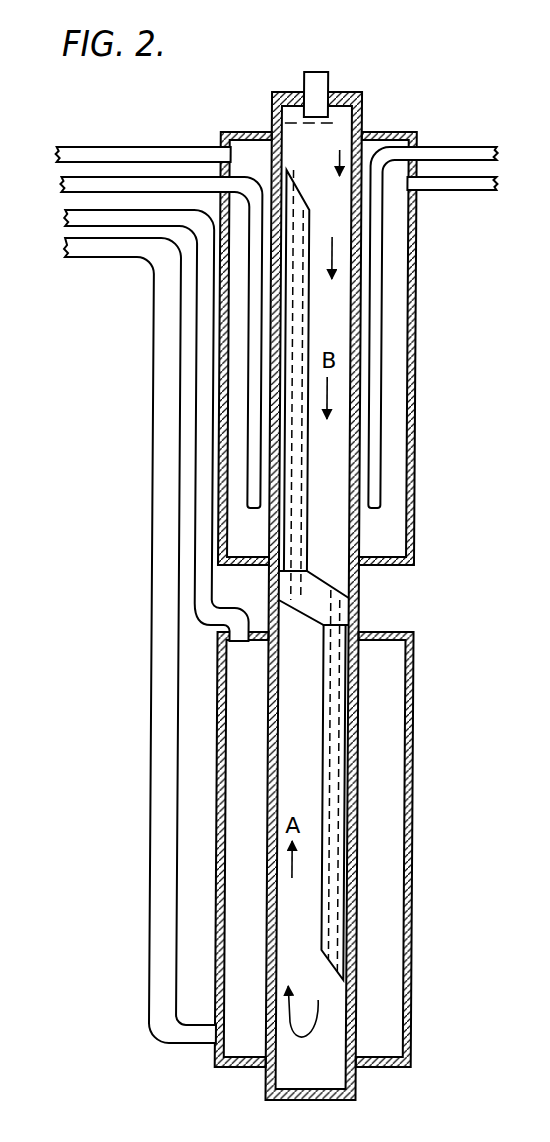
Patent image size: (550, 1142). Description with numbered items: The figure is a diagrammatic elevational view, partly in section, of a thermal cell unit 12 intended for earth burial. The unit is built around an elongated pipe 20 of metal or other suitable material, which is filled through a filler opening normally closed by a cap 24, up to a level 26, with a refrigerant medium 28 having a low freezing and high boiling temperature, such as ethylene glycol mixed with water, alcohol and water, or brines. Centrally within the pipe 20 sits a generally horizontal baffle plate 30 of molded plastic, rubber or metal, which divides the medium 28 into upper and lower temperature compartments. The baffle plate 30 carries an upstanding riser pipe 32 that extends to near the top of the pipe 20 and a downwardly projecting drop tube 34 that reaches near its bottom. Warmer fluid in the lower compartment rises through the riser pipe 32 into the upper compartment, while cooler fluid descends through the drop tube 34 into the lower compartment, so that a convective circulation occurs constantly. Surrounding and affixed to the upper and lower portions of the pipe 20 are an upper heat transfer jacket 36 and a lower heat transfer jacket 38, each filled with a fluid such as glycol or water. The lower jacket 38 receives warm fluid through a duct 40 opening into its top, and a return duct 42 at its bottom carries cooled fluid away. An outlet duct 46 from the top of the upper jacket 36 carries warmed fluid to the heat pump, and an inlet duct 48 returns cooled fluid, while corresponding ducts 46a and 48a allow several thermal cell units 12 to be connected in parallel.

The thermal cell unit 12 is at (465, 296).
The elongated pipe 20 is at (358, 578).
The cap 24 is at (323, 82).
The level 26 is at (340, 122).
The refrigerant medium 28 is at (315, 153).
The baffle plate 30 is at (317, 575).
The riser pipe 32 is at (312, 230).
The drop tube 34 is at (328, 698).
The upper heat transfer jacket 36 is at (418, 355).
The lower heat transfer jacket 38 is at (415, 828).
The duct 40 is at (93, 218).
The return duct 42 is at (123, 253).
The outlet duct 46 is at (88, 150).
The inlet duct 48 is at (128, 180).
The duct 46a is at (457, 188).
The duct 48a is at (445, 150).